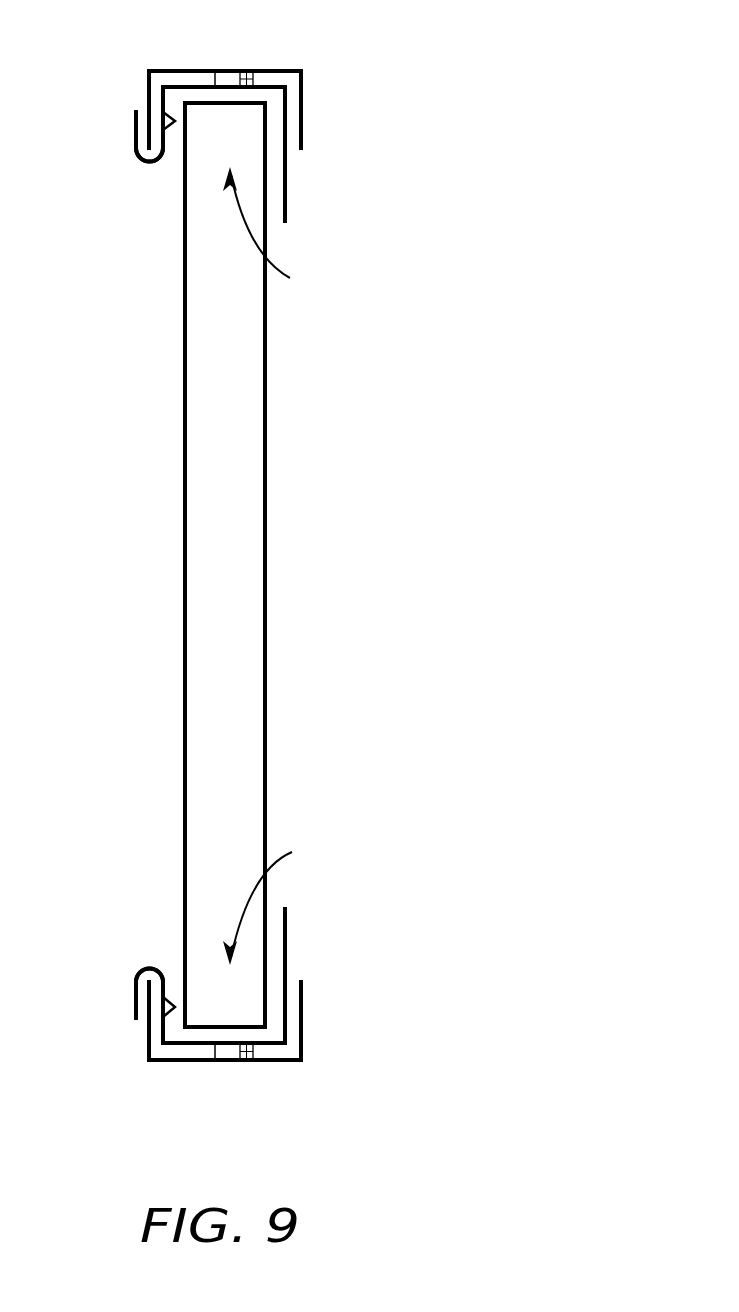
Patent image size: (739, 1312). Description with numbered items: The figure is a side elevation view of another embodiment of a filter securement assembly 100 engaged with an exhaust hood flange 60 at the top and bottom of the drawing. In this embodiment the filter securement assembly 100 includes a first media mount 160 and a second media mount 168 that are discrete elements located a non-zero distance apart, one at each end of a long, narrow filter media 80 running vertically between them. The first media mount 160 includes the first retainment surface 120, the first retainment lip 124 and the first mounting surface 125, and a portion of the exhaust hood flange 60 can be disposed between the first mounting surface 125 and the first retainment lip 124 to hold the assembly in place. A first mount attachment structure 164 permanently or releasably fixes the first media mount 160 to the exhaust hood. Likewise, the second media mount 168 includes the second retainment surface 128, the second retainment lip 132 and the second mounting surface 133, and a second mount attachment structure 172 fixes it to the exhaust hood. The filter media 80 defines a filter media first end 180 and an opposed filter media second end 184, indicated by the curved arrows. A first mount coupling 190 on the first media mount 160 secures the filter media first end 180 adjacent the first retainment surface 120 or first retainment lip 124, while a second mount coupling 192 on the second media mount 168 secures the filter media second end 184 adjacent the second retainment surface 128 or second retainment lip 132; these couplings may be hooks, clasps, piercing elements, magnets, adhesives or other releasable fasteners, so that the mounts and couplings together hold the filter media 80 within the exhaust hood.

The filter securement assembly 100 is at (460, 112).
The exhaust hood flange 60 is at (302, 98).
The filter media 80 is at (238, 488).
The first retainment surface 120 is at (215, 71).
The first retainment lip 124 is at (162, 97).
The first mounting surface 125 is at (136, 130).
The second retainment surface 128 is at (215, 1060).
The second retainment lip 132 is at (162, 1033).
The second mounting surface 133 is at (136, 998).
The first media mount 160 is at (285, 188).
The first mount attachment structure 164 is at (254, 78).
The second media mount 168 is at (285, 943).
The second mount attachment structure 172 is at (257, 1053).
The filter media first end 180 is at (280, 233).
The filter media second end 184 is at (280, 898).
The first mount coupling 190 is at (169, 128).
The second mount coupling 192 is at (169, 1002).